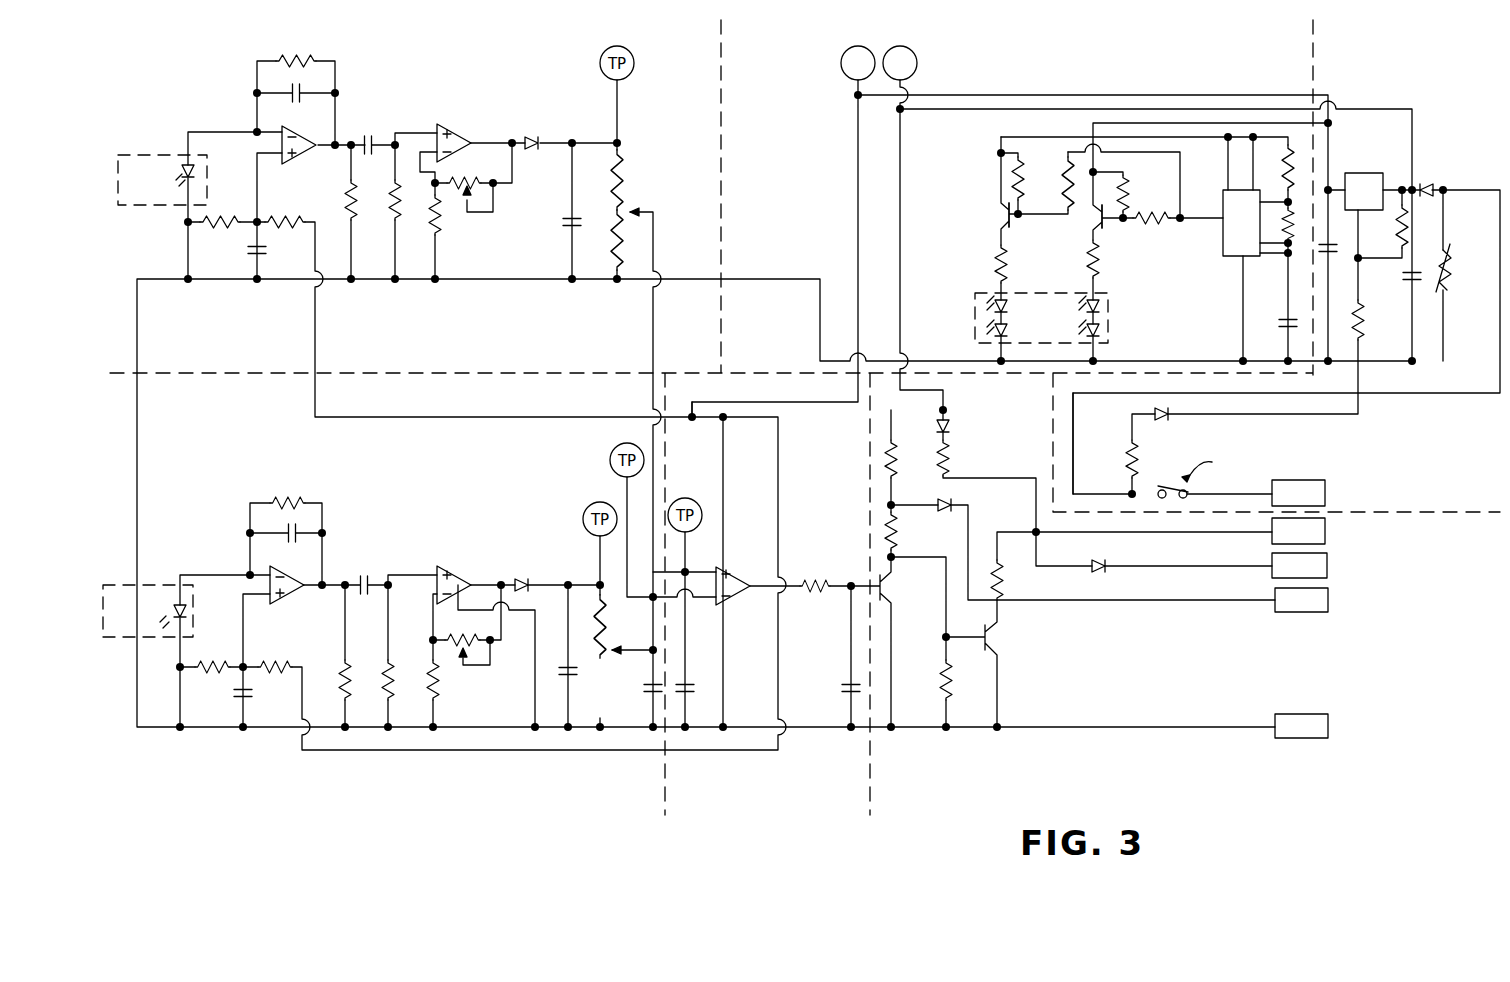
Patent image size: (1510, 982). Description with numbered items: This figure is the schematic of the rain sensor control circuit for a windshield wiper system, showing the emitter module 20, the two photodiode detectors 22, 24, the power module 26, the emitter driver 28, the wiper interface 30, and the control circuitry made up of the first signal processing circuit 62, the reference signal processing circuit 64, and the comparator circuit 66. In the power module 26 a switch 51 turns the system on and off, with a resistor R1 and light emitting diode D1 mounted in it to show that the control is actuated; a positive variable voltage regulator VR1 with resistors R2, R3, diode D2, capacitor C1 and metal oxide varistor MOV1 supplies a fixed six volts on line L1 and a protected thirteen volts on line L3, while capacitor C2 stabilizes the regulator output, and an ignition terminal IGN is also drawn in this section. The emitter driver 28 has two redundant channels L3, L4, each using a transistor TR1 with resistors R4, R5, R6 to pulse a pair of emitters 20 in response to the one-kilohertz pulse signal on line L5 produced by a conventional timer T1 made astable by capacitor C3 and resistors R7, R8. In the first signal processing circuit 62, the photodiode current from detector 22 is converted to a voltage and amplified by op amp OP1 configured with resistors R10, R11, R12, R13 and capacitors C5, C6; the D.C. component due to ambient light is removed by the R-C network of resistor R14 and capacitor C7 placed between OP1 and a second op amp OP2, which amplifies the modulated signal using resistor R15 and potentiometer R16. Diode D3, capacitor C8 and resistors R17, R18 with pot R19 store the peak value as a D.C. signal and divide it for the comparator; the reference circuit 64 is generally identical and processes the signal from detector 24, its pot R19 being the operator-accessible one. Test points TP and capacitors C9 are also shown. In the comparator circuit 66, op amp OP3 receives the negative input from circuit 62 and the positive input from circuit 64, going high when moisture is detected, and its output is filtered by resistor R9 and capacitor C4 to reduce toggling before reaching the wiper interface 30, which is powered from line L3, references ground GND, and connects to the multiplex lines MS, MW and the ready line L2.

The emitter module 20 is at (1080, 320).
The detector 22 is at (180, 604).
The detector 24 is at (185, 162).
The power module 26 is at (1368, 466).
The emitter driver 28 is at (1050, 75).
The wiper interface 30 is at (1049, 768).
The switch 51 is at (1193, 472).
The first signal processing circuit 62 is at (459, 502).
The reference signal processing circuit 64 is at (453, 75).
The comparator circuit 66 is at (723, 801).
The resistor R10 is at (296, 61).
The capacitor C5 is at (306, 322).
The amplifier OP1 is at (306, 154).
The second op amp OP2 is at (447, 127).
The comparator op amp OP3 is at (730, 596).
The capacitor C7 is at (362, 352).
The resistor R11 is at (220, 429).
The resistor R12 is at (287, 433).
The capacitor C6 is at (248, 250).
The resistor R13 is at (364, 440).
The resistor R14 is at (407, 440).
The resistor R15 is at (450, 447).
The potentiometer R16 is at (468, 402).
The diode D3 is at (528, 128).
The capacitor C8 is at (557, 457).
The resistor R17 is at (618, 172).
The resistor R18 is at (614, 253).
The potentiometer R19 is at (618, 201).
The test point TP is at (642, 291).
The capacitor C9 is at (644, 690).
The resistor R9 is at (816, 582).
The capacitor C4 is at (846, 684).
The resistor R4 is at (1022, 182).
The resistor R5 is at (1150, 233).
The resistor R6 is at (997, 272).
The transistor TR1 is at (1004, 221).
The line / channel L3 is at (1003, 292).
The channel L4 is at (1094, 275).
The line L5 is at (1200, 210).
The line L1 is at (1332, 150).
The 555 timer T1 is at (1241, 223).
The resistor R8 is at (1288, 174).
The resistor R7 is at (1300, 224).
The capacitor C3 is at (1282, 320).
The capacitor C2 is at (1346, 256).
The capacitor C1 is at (1396, 276).
The positive variable voltage regulator VR1 is at (1364, 191).
The diode D2 is at (1425, 186).
The resistor R3 is at (1397, 230).
The resistor R2 is at (1356, 336).
The metal oxide varistor MOV1 is at (1470, 290).
The light emitting diode D1 is at (1170, 418).
The resistor R1 is at (1138, 474).
The ignition terminal IGN is at (1298, 493).
The line MS is at (1298, 531).
The line MW is at (1209, 565).
The line L2 is at (1301, 600).
The ground terminal GND is at (1301, 726).